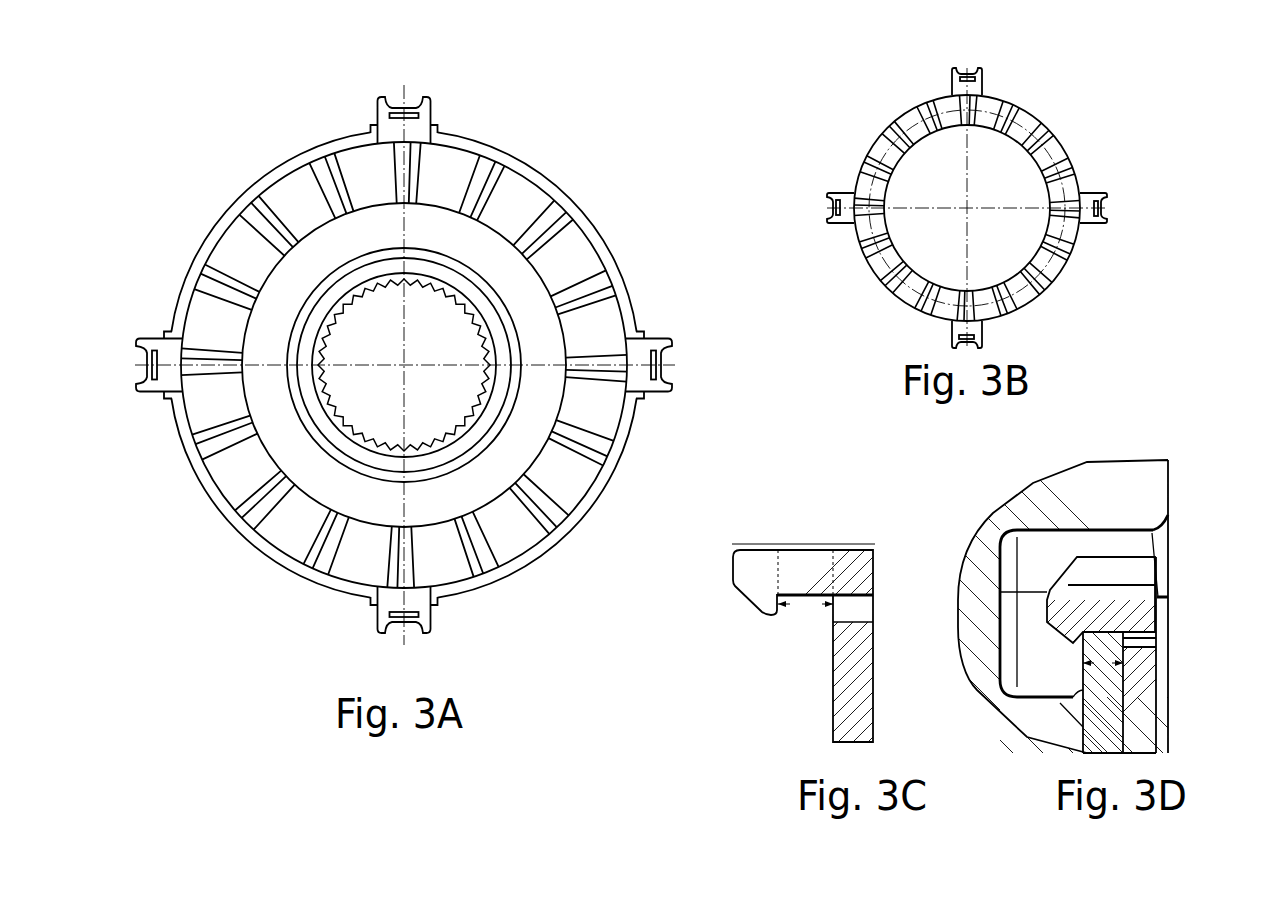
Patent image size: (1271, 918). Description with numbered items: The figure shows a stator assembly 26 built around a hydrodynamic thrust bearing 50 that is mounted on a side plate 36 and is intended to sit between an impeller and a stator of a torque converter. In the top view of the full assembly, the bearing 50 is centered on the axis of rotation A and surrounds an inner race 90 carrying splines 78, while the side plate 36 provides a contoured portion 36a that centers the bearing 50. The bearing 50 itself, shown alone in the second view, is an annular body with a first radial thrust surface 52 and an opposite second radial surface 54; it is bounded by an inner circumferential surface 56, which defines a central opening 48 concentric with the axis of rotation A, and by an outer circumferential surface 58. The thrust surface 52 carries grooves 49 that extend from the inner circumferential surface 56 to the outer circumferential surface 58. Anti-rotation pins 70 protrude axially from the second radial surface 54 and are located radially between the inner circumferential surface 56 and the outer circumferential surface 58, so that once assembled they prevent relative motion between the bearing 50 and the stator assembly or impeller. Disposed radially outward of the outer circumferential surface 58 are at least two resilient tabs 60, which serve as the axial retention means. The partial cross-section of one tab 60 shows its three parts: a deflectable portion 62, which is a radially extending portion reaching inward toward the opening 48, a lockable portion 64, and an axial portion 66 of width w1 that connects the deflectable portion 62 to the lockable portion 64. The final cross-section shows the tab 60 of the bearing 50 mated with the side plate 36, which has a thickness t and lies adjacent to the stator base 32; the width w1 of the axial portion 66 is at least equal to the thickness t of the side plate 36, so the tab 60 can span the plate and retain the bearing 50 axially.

In FIG. 3A, the stator assembly 26 is at (533, 124).
In FIG. 3D, the stator assembly 26 is at (1184, 511).
In FIG. 3D, the stator base 32 is at (1115, 473).
In FIG. 3A, the side plate 36 is at (263, 180).
In FIG. 3D, the side plate 36 is at (1113, 737).
In FIG. 3A, the contoured portion 36a is at (492, 320).
In FIG. 3B, the opening 48 is at (1005, 188).
In FIG. 3B, the grooves 49 is at (863, 157).
In FIG. 3A, the hydrodynamic thrust bearing 50 is at (574, 129).
In FIG. 3B, the hydrodynamic thrust bearing 50 is at (1064, 106).
In FIG. 3D, the hydrodynamic thrust bearing 50 is at (1158, 693).
In FIG. 3A, the first radial thrust surface 52 is at (527, 205).
In FIG. 3B, the first radial thrust surface 52 is at (1048, 270).
In FIG. 3C, the first radial thrust surface 52 is at (873, 655).
In FIG. 3A, the second radial surface 54 is at (578, 216).
In FIG. 3B, the second radial surface 54 is at (1047, 312).
In FIG. 3C, the second radial surface 54 is at (833, 682).
In FIG. 3A, the inner circumferential surface 56 is at (556, 393).
In FIG. 3B, the inner circumferential surface 56 is at (930, 273).
In FIG. 3A, the outer circumferential surface 58 is at (587, 497).
In FIG. 3B, the outer circumferential surface 58 is at (872, 272).
In FIG. 3A, the resilient tab 60 is at (432, 112).
In FIG. 3B, the resilient tab 60 is at (983, 80).
In FIG. 3C, the resilient tab 60 is at (838, 513).
In FIG. 3D, the resilient tab 60 is at (1168, 592).
In FIG. 3C, the deflectable portion 62 is at (852, 544).
In FIG. 3D, the deflectable portion 62 is at (1135, 660).
In FIG. 3C, the lockable portion 64 is at (757, 544).
In FIG. 3D, the lockable portion 64 is at (1060, 622).
In FIG. 3C, the axial portion 66 is at (805, 544).
In FIG. 3D, the axial portion 66 is at (1100, 620).
In FIG. 3B, the anti-rotation pin 70 is at (1079, 145).
In FIG. 3A, the splines 78 is at (483, 400).
In FIG. 3A, the inner race 90 is at (497, 342).
In FIG. 3A, the axis of rotation A is at (404, 365).
In FIG. 3C, the width w1 is at (805, 605).
In FIG. 3D, the thickness t is at (1103, 652).